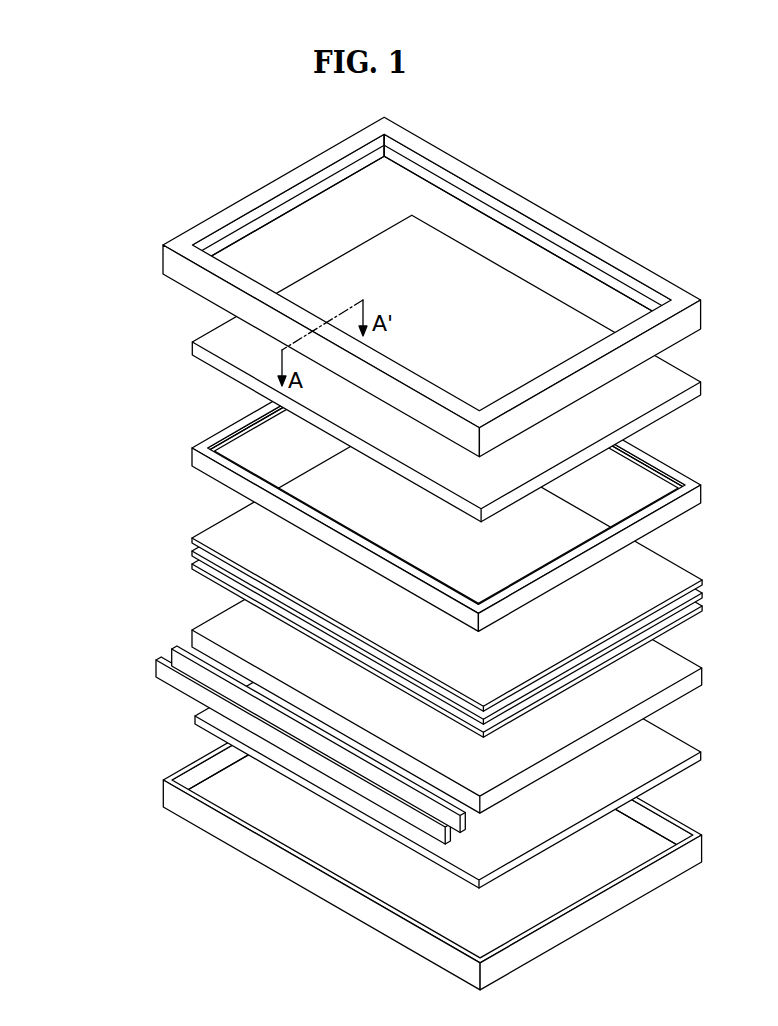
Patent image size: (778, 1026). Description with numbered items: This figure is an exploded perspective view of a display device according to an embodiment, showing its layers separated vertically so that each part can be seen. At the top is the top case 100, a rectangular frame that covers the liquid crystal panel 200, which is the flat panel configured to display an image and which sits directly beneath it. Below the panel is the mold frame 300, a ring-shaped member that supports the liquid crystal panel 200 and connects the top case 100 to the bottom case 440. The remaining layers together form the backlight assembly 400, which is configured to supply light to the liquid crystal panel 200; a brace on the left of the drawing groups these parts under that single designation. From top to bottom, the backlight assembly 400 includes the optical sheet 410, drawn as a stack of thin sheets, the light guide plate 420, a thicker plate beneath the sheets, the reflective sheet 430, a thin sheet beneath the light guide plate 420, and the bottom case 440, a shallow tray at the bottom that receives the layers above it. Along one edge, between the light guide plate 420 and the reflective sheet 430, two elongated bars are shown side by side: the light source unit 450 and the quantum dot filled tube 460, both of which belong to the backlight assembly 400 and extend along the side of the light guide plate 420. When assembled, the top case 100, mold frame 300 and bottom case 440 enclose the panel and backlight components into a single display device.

The top case 100 is at (174, 263).
The liquid crystal panel 200 is at (198, 349).
The mold frame 300 is at (198, 458).
The backlight assembly 400 is at (357, 701).
The optical sheet 410 is at (401, 574).
The light guide plate 420 is at (192, 637).
The reflective sheet 430 is at (196, 721).
The bottom case 440 is at (170, 797).
The light source unit 450 is at (182, 685).
The quantum dot filled tube 460 is at (171, 651).